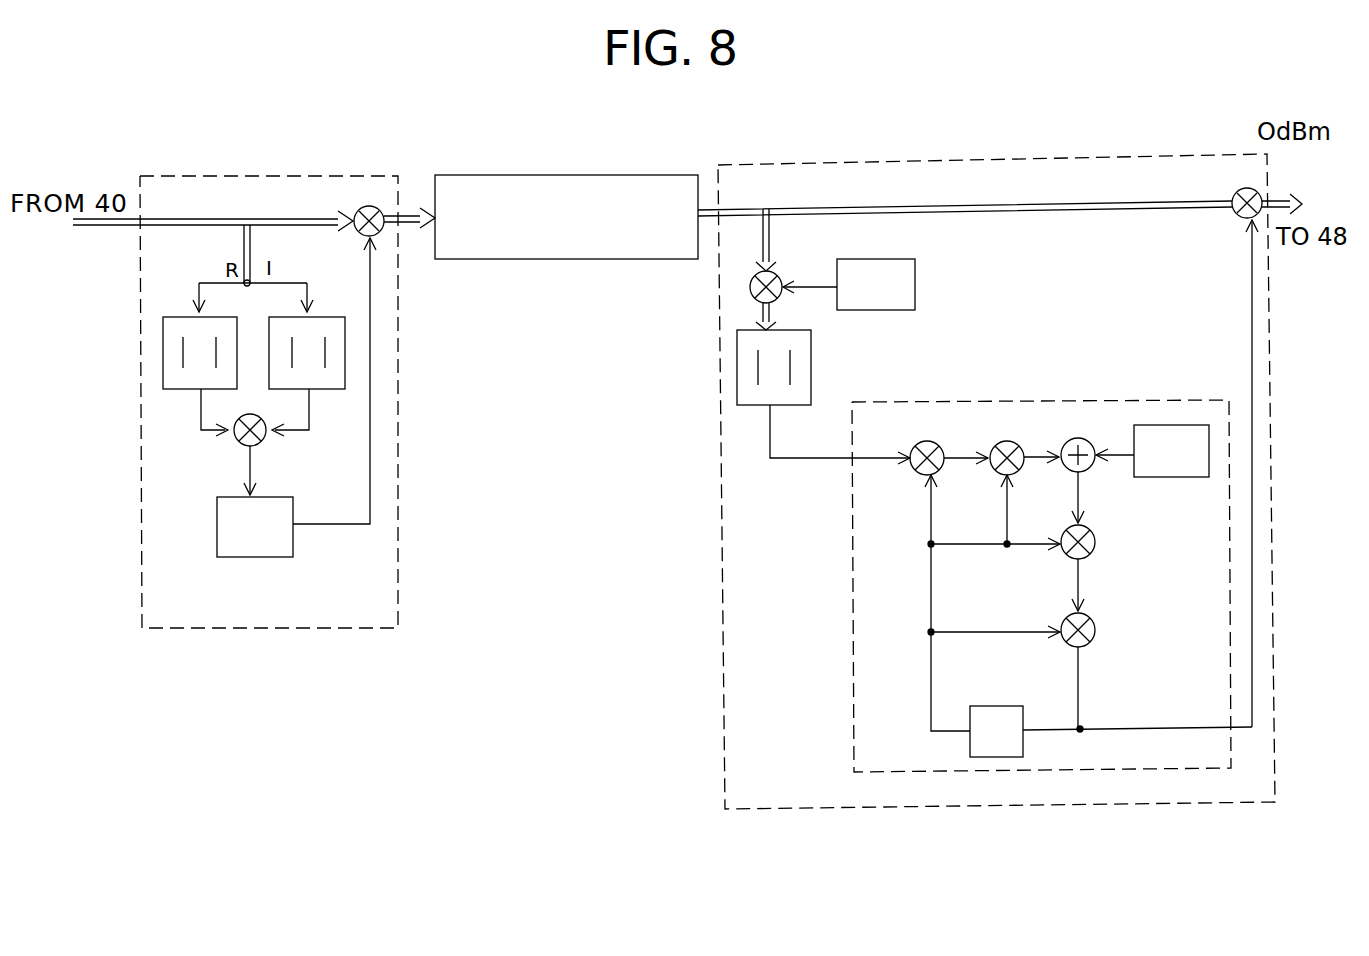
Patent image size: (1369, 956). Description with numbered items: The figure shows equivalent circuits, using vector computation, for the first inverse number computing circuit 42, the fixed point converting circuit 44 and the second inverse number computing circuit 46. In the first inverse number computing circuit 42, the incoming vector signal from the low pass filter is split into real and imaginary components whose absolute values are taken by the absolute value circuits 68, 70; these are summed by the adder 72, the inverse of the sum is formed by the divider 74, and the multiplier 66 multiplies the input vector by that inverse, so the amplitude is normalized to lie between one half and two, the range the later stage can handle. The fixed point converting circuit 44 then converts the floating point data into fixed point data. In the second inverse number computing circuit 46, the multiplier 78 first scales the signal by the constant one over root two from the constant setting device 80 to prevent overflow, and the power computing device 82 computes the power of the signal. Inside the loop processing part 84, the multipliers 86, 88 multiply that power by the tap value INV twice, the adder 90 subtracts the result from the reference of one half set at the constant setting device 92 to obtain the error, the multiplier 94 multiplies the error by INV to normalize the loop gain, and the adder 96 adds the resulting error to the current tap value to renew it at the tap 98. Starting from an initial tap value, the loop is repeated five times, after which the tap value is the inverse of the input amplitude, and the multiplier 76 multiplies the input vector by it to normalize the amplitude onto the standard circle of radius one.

The first inverse number computing circuit 42 is at (182, 176).
The fixed point converting circuit 44 is at (686, 147).
The second inverse number computing circuit 46 is at (1050, 152).
The multiplier 66 is at (350, 213).
The absolute value circuit 68 is at (190, 391).
The absolute value circuit 70 is at (330, 391).
The adder 72 is at (243, 444).
The divider 74 is at (296, 540).
The multiplier 76 is at (1235, 222).
The multiplier 78 is at (802, 262).
The constant setting device 80 is at (917, 284).
The power computing device 82 is at (812, 360).
The loop processing part 84 is at (912, 402).
The multiplier 86 is at (908, 442).
The multiplier 88 is at (988, 442).
The adder 90 is at (1062, 440).
The constant setting device 92 is at (1188, 478).
The multiplier 94 is at (1097, 545).
The adder 96 is at (1097, 632).
The tap 98 is at (1025, 740).